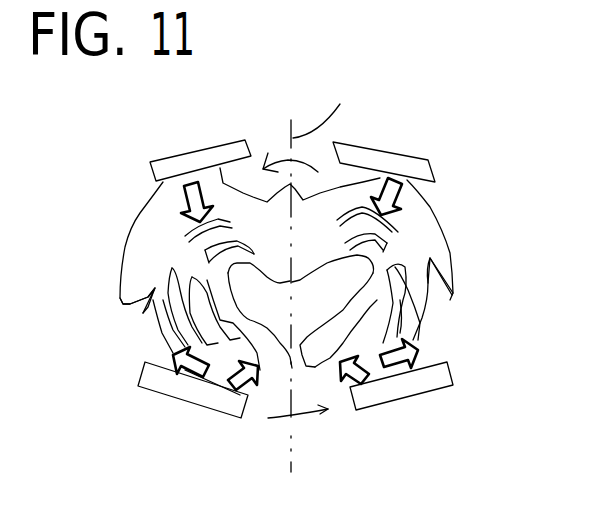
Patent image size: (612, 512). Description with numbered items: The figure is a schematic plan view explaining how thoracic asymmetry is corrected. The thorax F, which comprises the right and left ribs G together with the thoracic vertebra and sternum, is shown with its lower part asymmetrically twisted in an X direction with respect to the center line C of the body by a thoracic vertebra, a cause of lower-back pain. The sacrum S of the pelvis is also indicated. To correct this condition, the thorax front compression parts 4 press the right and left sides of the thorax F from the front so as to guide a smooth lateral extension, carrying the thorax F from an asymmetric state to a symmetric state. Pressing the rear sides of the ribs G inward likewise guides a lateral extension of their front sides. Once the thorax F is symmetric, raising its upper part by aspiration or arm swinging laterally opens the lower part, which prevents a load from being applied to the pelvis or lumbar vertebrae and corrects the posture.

The X direction X is at (285, 160).
The center line C is at (319, 115).
The thorax F is at (489, 253).
The ribs G is at (153, 310).
The sacrum S is at (190, 158).
The thorax front compression parts 4 is at (175, 390).